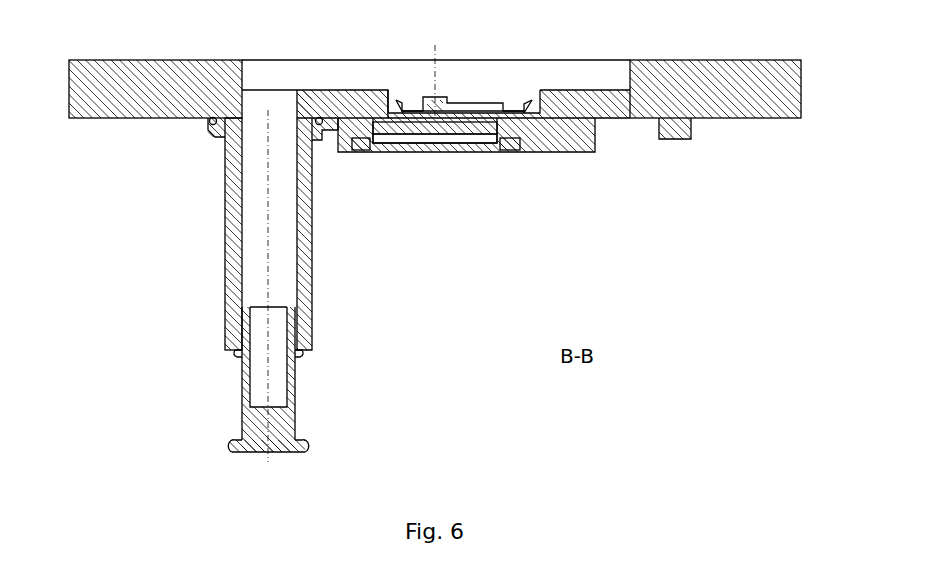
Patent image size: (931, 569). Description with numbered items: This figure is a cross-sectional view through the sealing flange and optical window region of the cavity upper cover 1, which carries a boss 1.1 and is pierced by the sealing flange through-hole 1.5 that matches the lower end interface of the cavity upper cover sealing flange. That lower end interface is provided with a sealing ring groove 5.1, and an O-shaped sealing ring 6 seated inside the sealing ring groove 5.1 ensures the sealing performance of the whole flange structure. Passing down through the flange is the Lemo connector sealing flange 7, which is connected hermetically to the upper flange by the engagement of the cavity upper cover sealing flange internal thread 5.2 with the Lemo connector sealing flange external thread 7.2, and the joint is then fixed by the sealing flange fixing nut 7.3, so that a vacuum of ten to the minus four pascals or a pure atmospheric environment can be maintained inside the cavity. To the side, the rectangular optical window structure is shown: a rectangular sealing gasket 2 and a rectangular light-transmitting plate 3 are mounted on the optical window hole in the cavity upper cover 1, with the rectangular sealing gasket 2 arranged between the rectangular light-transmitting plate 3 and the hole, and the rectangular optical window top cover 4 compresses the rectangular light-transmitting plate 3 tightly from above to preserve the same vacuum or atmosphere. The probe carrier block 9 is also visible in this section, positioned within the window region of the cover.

The cavity upper cover 1 is at (435, 99).
The boss 1.1 is at (545, 135).
The sealing flange through-hole 1.5 is at (297, 102).
The rectangular sealing gasket 2 is at (505, 125).
The rectangular light-transmitting plate 3 is at (455, 130).
The rectangular optical window top cover 4 is at (368, 140).
The sealing ring groove 5.1 is at (209, 124).
The cavity upper cover sealing flange internal thread 5.2 is at (310, 307).
The O-shaped sealing ring 6 is at (217, 133).
The Lemo connector sealing flange 7 is at (268, 379).
The Lemo connector sealing flange external thread 7.2 is at (230, 350).
The sealing flange fixing nut 7.3 is at (303, 357).
The probe carrier block 9 is at (462, 100).